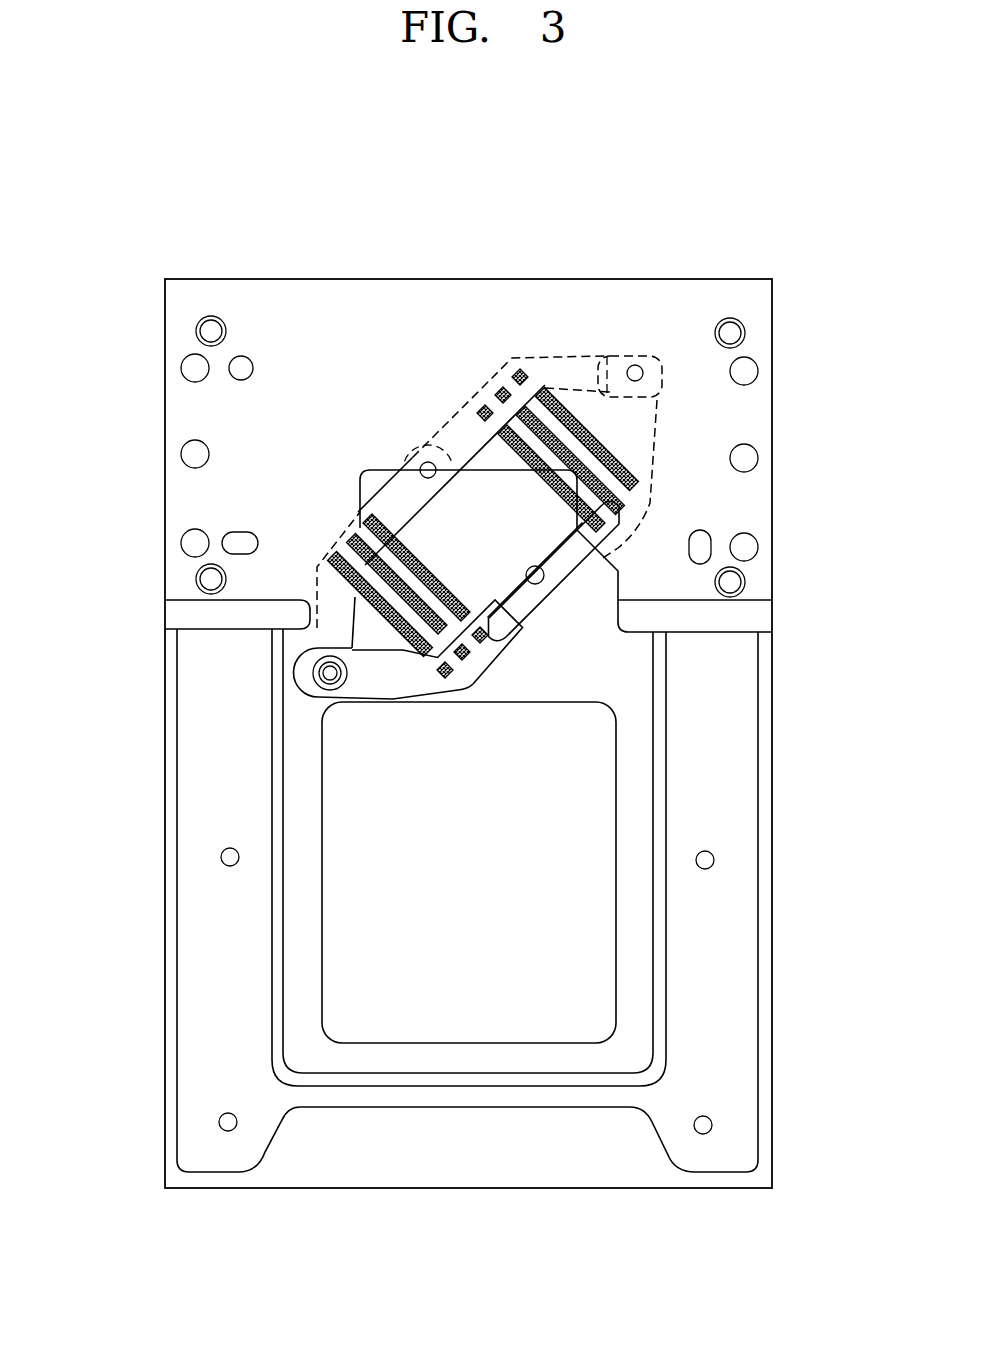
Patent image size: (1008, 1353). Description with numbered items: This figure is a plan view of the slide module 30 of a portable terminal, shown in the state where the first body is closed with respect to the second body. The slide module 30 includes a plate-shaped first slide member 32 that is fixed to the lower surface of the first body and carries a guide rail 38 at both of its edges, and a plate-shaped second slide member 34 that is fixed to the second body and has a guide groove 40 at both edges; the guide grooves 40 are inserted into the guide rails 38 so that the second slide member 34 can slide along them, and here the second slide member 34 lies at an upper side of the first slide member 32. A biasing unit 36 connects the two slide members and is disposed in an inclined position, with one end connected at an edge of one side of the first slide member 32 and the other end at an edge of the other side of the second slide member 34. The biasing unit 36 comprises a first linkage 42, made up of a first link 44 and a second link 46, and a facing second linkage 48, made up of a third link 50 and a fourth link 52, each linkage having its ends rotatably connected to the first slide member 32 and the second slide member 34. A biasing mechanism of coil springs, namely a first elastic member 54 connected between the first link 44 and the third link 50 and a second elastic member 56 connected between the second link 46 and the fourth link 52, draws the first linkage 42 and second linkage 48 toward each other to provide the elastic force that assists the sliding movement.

The slide module 30 is at (120, 387).
The first slide member 32 is at (747, 815).
The second slide member 34 is at (750, 311).
The biasing unit 36 is at (505, 658).
The guide rail 38 is at (758, 925).
The guide groove 40 is at (772, 503).
The first linkage 42 is at (375, 213).
The first link 44 is at (407, 458).
The second link 46 is at (456, 412).
The second linkage 48 is at (853, 598).
The third link 50 is at (503, 630).
The fourth link 52 is at (565, 570).
The first elastic member 54 is at (353, 597).
The second elastic member 56 is at (580, 440).